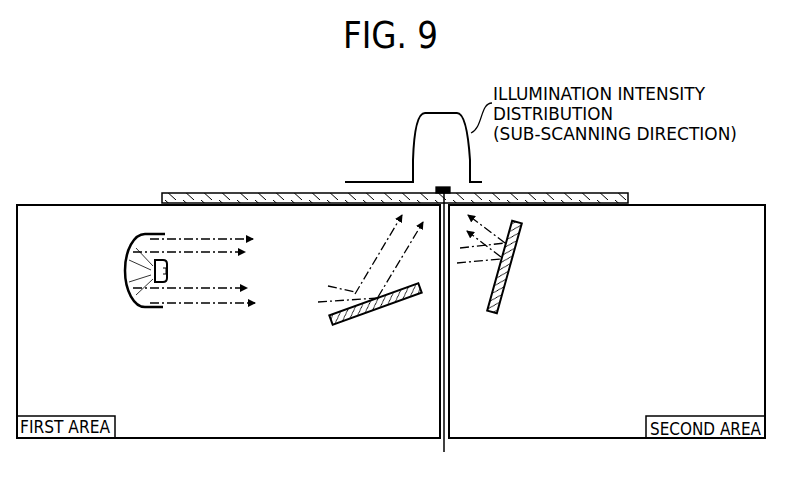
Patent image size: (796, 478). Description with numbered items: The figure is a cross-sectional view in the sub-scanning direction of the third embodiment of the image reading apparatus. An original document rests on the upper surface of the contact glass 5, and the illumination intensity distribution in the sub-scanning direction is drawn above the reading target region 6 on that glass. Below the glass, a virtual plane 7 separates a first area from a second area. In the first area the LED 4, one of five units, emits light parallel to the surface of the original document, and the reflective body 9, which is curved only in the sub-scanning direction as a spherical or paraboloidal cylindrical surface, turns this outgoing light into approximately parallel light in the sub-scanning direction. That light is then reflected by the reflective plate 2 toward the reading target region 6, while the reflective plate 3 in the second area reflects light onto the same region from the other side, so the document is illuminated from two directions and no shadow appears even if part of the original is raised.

The reflective plate 2 is at (371, 320).
The reflective plate 3 is at (511, 276).
The LED 4 is at (166, 257).
The contact glass 5 is at (281, 193).
The reading target region 6 is at (451, 188).
The virtual plane 7 is at (446, 333).
The reflective body 9 is at (163, 308).